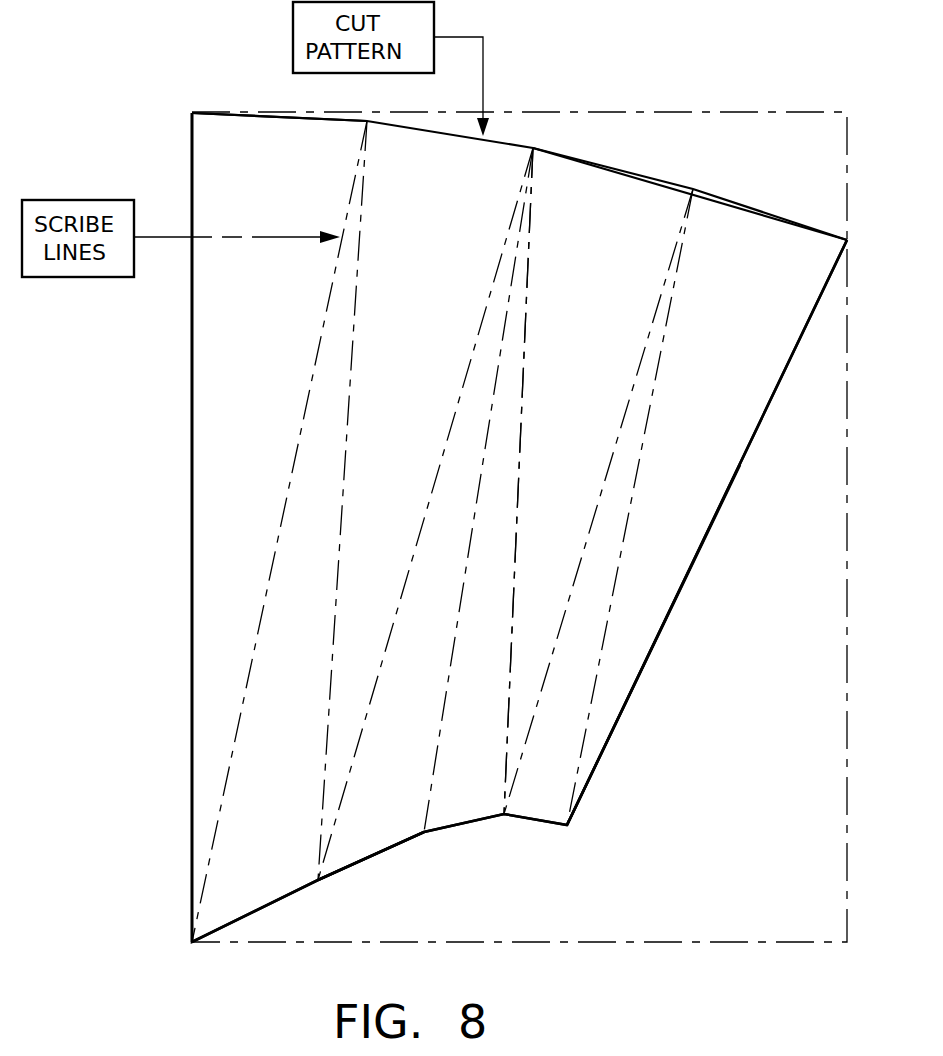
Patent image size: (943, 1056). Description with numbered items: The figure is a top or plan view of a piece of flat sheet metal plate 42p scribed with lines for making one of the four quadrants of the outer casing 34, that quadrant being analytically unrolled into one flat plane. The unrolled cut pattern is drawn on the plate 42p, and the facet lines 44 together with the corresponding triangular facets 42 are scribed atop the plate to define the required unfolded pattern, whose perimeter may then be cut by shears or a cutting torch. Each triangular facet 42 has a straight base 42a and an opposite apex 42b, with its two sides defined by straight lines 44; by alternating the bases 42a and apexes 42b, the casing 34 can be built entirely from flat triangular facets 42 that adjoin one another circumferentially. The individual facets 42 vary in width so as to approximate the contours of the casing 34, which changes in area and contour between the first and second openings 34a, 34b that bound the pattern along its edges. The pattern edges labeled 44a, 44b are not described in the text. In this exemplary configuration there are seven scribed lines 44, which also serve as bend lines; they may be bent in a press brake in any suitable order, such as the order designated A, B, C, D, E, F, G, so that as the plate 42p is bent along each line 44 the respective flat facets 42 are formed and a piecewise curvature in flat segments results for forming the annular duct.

The outer casing 34 is at (676, 147).
The first opening 34a is at (720, 193).
The second opening 34b is at (392, 852).
The triangular facet 42 is at (612, 260).
The base 42a is at (318, 122).
The apex 42b is at (320, 884).
The flat sheet metal plate 42p is at (725, 422).
The facet line 44 is at (525, 338).
The left side scribe line 44a is at (192, 442).
The right side scribe line 44b is at (693, 570).
The bend order designation A is at (296, 462).
The bend order designation B is at (330, 704).
The bend order designation C is at (434, 514).
The bend order designation D is at (440, 747).
The bend order designation E is at (500, 738).
The bend order designation F is at (604, 493).
The bend order designation G is at (590, 698).